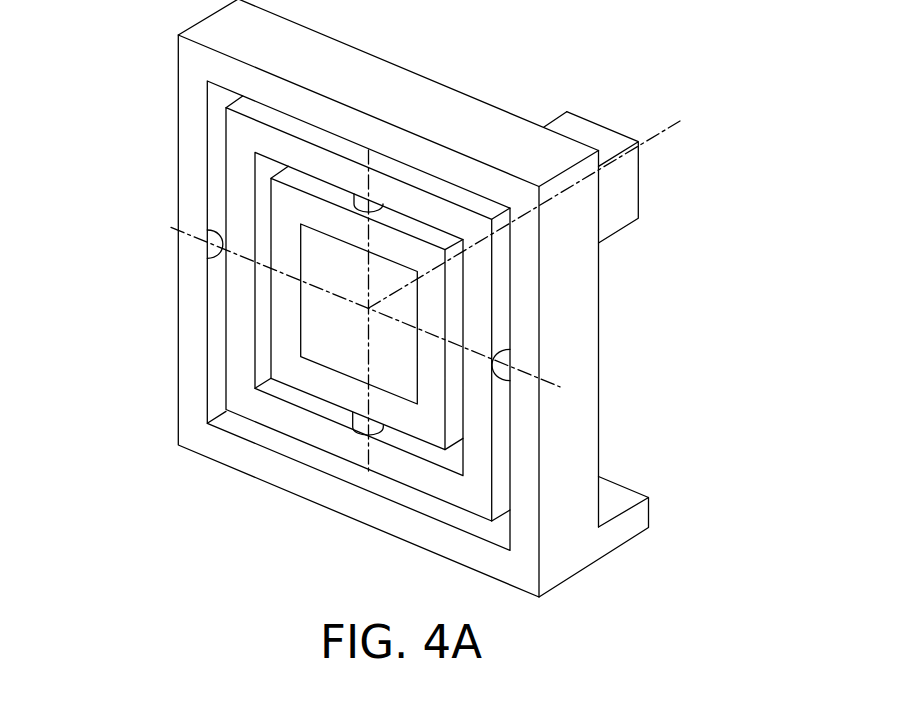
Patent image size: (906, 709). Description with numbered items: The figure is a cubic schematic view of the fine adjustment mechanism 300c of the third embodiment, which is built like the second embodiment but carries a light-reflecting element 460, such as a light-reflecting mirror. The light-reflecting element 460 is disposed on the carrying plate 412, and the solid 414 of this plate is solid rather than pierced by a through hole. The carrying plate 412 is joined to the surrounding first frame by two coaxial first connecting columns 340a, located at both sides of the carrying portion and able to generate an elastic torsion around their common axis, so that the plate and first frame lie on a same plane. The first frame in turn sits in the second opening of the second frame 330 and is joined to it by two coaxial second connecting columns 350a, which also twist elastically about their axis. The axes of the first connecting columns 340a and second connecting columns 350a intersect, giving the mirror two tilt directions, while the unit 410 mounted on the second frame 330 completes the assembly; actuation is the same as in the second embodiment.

The fine adjustment mechanism 300c is at (411, 307).
The second frame 330 is at (587, 410).
The first connecting columns 340a is at (372, 205).
The second connecting columns 350a is at (210, 242).
The actuator unit 410 is at (581, 121).
The carrying plate 412 is at (531, 128).
The solid 414 is at (590, 130).
The light-reflecting element 460 is at (328, 308).